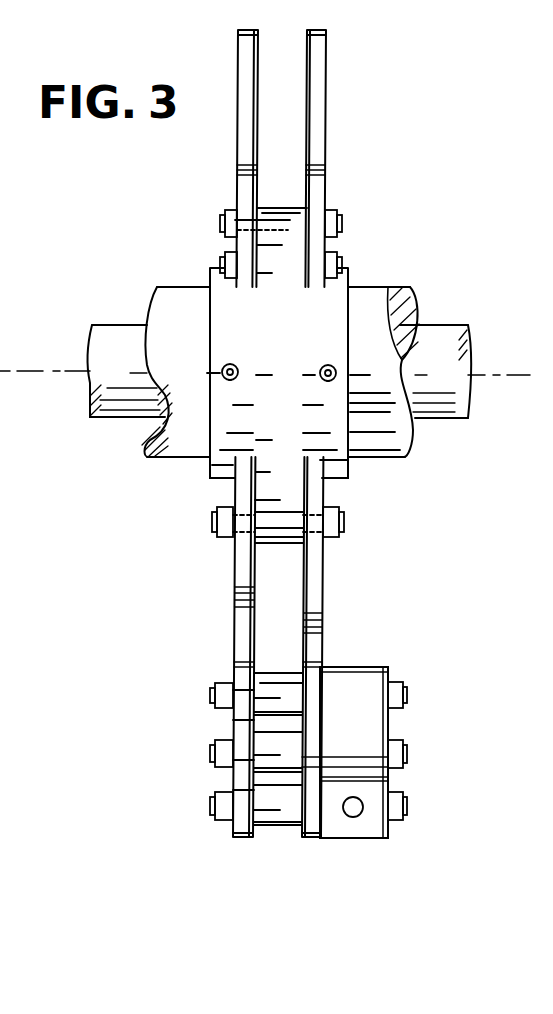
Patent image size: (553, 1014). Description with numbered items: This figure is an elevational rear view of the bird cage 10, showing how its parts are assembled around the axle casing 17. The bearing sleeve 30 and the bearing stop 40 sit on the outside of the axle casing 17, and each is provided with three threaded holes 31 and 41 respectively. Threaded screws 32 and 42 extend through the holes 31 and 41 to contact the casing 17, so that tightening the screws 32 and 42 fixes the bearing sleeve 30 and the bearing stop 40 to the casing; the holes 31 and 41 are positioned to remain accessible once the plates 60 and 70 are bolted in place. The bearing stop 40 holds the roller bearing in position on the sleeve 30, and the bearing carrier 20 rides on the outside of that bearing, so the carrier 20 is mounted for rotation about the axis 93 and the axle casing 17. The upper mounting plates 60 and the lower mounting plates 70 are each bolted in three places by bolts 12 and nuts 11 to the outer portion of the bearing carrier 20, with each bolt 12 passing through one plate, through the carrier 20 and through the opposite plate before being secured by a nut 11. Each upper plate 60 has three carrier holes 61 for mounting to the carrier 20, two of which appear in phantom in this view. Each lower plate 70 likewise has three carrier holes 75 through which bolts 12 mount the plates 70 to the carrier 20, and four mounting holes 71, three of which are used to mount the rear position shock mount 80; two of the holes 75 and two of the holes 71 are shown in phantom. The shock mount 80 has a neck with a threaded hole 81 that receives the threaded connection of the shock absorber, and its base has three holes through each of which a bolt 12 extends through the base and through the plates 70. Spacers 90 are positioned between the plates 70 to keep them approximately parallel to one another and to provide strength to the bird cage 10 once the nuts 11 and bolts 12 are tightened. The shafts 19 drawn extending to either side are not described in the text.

The bird cage 10 is at (380, 473).
The nut 11 is at (328, 210).
The bolt 12 is at (222, 222).
The axle casing 17 is at (182, 286).
The shaft 19 is at (123, 323).
The bearing carrier 20 is at (290, 502).
The bearing sleeve 30 is at (347, 273).
The threaded hole 31 is at (338, 368).
The threaded screw 32 is at (334, 382).
The bearing stop 40 is at (225, 316).
The threaded hole 41 is at (223, 381).
The threaded screw 42 is at (222, 366).
The upper mounting plate 60 is at (306, 93).
The carrier hole 61 is at (298, 205).
The mounting plate 70 is at (303, 840).
The mounting hole 71 is at (226, 782).
The carrier hole 75 is at (245, 530).
The rear position shock mount 80 is at (345, 665).
The threaded hole 81 is at (359, 816).
The spacer 90 is at (267, 740).
The axis 93 is at (8, 373).